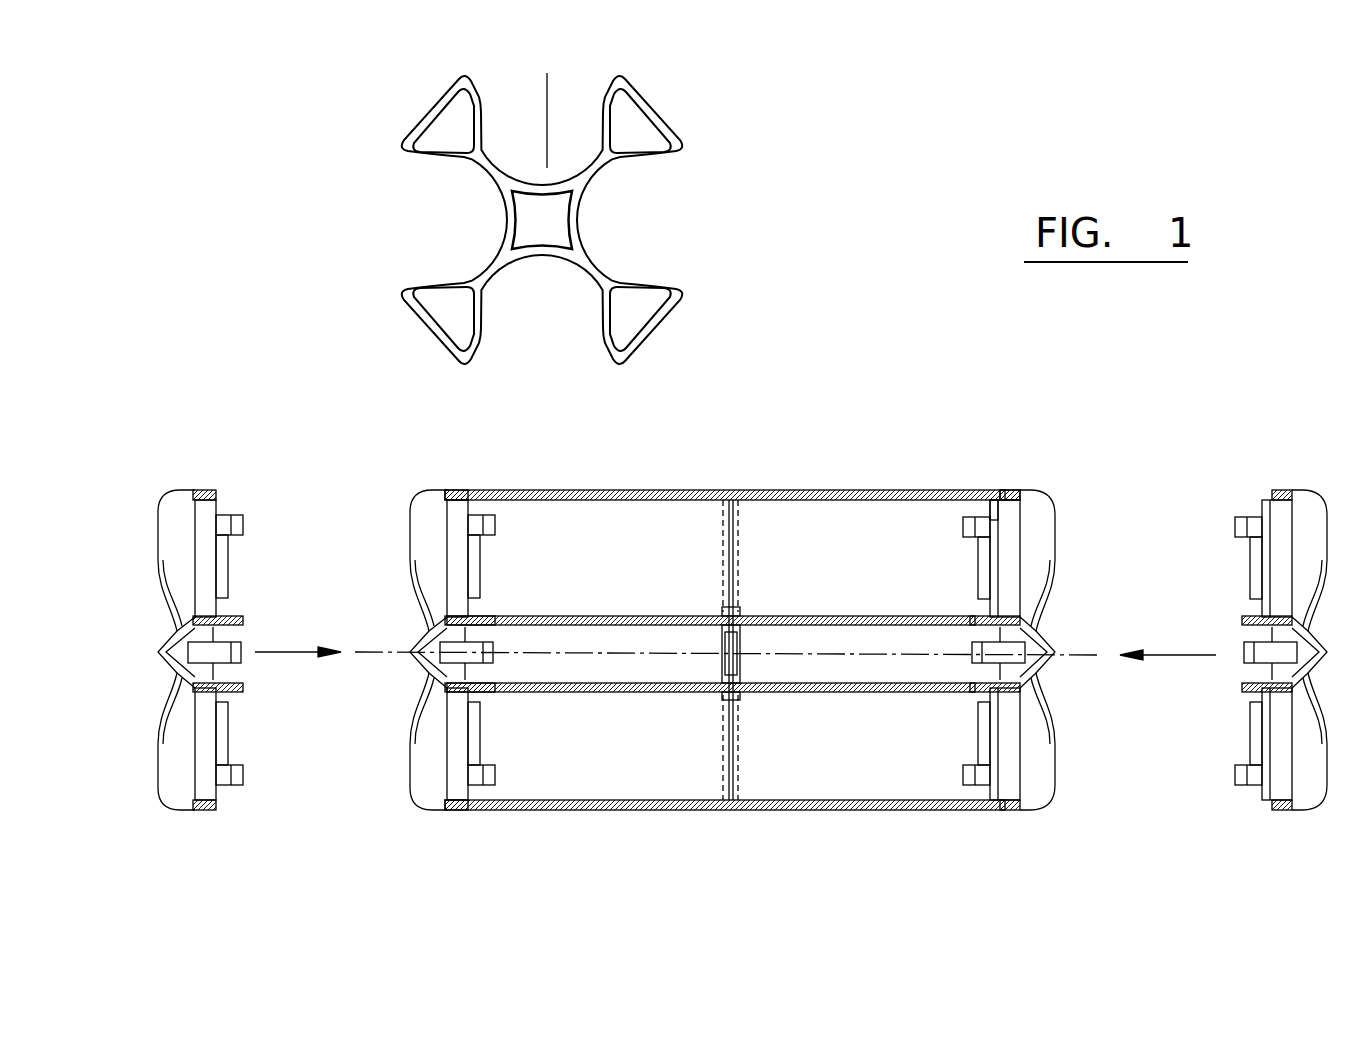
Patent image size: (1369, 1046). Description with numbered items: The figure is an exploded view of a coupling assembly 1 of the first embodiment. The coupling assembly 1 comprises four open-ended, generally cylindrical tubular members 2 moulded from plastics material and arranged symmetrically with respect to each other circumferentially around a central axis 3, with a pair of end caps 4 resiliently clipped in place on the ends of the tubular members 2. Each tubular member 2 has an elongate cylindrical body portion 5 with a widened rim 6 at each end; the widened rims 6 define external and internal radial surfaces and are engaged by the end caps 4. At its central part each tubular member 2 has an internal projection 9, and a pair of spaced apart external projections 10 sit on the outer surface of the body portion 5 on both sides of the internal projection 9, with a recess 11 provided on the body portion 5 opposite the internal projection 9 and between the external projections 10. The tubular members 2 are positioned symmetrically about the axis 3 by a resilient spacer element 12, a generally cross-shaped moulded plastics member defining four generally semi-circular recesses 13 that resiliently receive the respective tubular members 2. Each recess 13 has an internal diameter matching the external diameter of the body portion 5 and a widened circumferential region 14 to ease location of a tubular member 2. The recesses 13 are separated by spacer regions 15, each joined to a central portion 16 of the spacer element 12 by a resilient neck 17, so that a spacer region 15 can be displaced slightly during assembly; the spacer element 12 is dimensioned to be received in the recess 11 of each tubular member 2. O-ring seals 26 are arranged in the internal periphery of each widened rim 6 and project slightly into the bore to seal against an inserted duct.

The coupling assembly 1 is at (735, 644).
The tubular members 2 is at (532, 538).
The central axis 3 is at (580, 652).
The end caps 4 is at (173, 787).
The body portion 5 is at (915, 810).
The widened rim 6 is at (990, 495).
The internal projection 9 is at (748, 495).
The external projections 10 is at (723, 493).
The recess 11 is at (740, 617).
The spacer element 12 is at (574, 407).
The semi-circular recesses 13 is at (547, 103).
The widened circumferential region 14 is at (488, 274).
The spacer regions 15 is at (500, 95).
The central portion 16 is at (589, 220).
The resilient neck 17 is at (542, 220).
The O-ring seals 26 is at (993, 507).